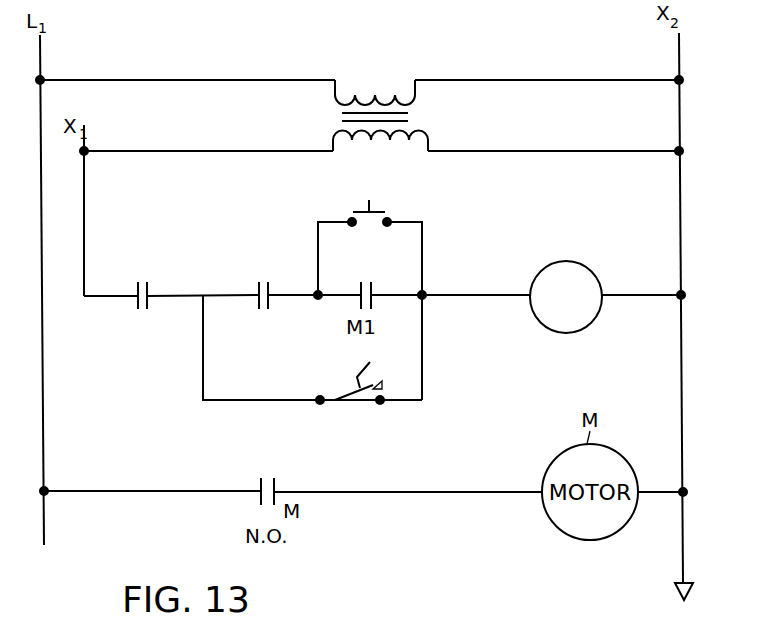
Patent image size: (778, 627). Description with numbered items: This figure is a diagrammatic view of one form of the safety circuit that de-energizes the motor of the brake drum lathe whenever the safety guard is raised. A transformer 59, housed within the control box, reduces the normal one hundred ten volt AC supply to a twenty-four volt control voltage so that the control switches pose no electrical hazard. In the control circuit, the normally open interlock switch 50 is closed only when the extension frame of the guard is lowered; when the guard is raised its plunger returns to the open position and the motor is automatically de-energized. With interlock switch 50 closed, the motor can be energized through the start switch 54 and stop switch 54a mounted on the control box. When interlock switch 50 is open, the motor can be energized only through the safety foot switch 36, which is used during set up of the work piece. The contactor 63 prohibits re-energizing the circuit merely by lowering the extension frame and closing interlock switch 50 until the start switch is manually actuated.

The transformer 59 is at (431, 68).
The start/stop switch 54 is at (397, 213).
The stop switch 54a is at (121, 302).
The interlock switch 50 is at (243, 290).
The foot switch 36 is at (342, 387).
The contactor 63 is at (567, 262).